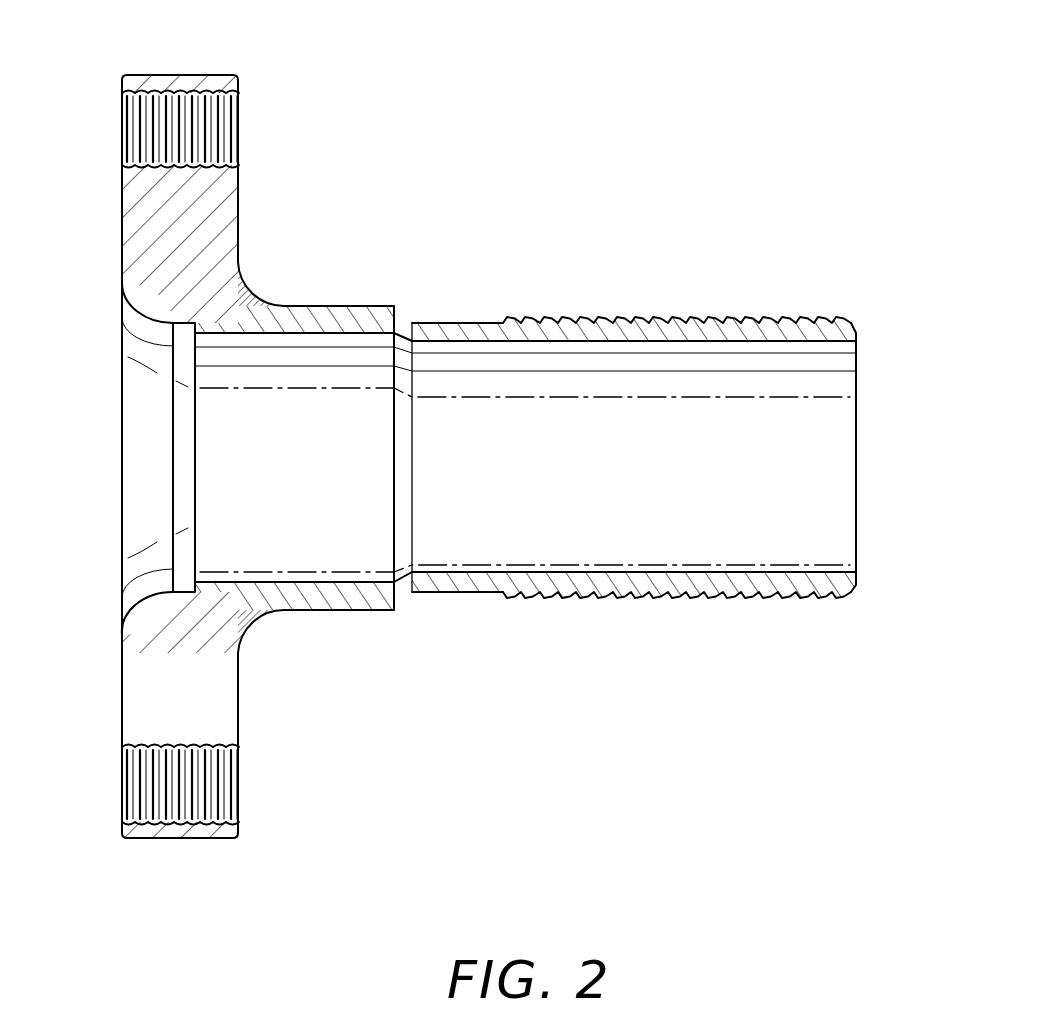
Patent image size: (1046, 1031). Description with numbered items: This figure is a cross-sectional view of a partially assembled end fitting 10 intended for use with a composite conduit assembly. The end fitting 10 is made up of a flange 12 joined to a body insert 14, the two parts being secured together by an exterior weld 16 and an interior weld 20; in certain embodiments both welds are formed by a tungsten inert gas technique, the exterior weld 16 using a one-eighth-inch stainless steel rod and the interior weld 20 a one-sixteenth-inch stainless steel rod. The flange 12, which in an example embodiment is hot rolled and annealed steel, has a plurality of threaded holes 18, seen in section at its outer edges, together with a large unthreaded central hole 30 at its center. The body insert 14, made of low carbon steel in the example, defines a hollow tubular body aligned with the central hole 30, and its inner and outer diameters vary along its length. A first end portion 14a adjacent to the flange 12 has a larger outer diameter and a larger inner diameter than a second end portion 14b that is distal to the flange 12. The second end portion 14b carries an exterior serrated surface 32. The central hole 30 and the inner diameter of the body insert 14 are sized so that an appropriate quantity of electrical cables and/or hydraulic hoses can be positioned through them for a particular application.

The partially assembled end fitting 10 is at (635, 172).
The flange 12 is at (219, 78).
The body insert 14 is at (438, 324).
The first end portion 14a is at (310, 306).
The second end portion 14b is at (858, 333).
The exterior weld 16 is at (253, 276).
The threaded holes 18 is at (218, 140).
The interior weld 20 is at (188, 417).
The central hole 30 is at (130, 446).
The exterior serrated surface 32 is at (641, 322).